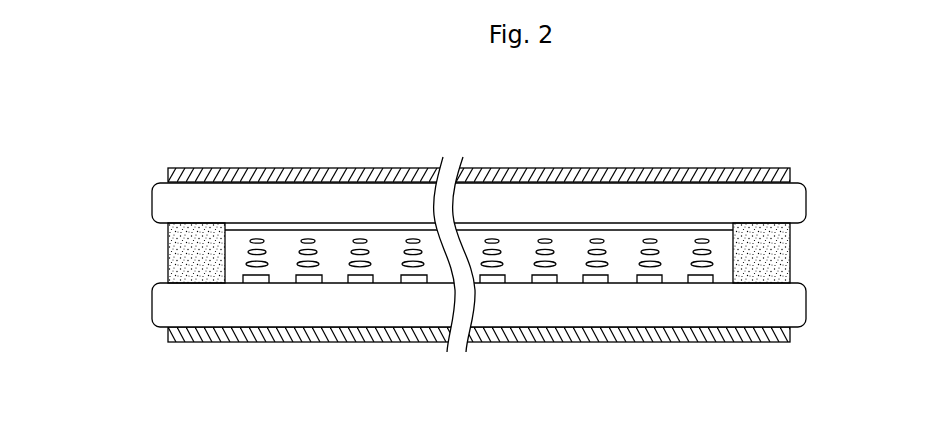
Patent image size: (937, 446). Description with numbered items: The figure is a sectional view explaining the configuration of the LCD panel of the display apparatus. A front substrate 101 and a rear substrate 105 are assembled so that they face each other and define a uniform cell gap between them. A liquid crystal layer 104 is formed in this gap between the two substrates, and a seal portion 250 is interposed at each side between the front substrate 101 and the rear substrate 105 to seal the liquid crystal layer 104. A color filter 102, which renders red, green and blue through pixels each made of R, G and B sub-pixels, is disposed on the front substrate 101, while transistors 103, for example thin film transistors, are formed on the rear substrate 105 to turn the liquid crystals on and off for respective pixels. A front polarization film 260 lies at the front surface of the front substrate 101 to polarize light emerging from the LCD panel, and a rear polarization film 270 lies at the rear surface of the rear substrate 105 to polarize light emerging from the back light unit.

The front substrate 101 is at (790, 197).
The color filter 102 is at (284, 230).
The transistors 103 is at (313, 284).
The liquid crystal layer 104 is at (545, 246).
The rear substrate 105 is at (802, 300).
The seal portion 250 is at (180, 253).
The front polarization film 260 is at (377, 174).
The rear polarization film 270 is at (384, 335).